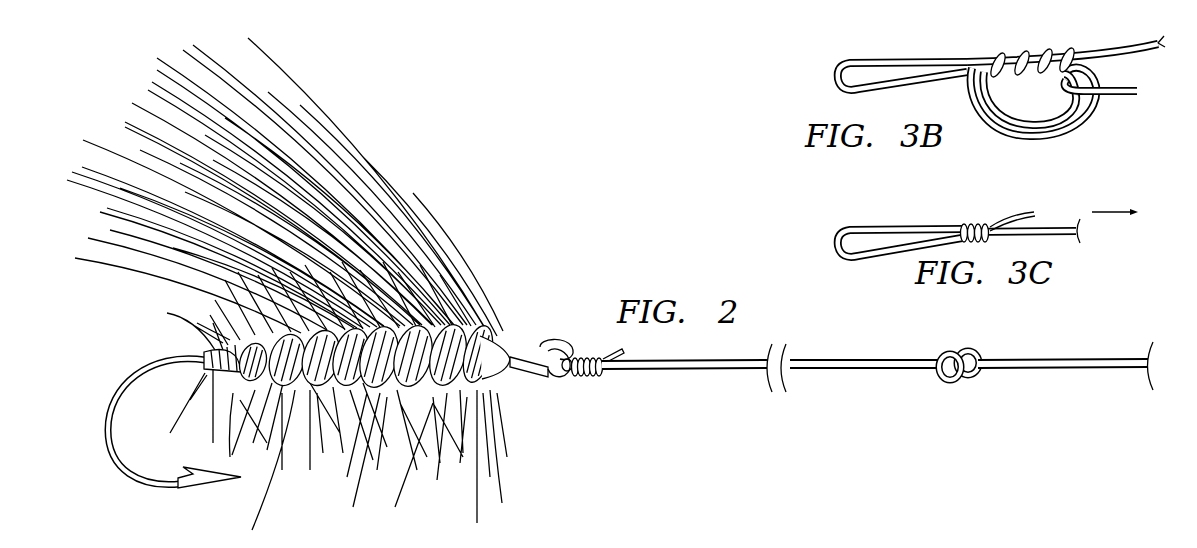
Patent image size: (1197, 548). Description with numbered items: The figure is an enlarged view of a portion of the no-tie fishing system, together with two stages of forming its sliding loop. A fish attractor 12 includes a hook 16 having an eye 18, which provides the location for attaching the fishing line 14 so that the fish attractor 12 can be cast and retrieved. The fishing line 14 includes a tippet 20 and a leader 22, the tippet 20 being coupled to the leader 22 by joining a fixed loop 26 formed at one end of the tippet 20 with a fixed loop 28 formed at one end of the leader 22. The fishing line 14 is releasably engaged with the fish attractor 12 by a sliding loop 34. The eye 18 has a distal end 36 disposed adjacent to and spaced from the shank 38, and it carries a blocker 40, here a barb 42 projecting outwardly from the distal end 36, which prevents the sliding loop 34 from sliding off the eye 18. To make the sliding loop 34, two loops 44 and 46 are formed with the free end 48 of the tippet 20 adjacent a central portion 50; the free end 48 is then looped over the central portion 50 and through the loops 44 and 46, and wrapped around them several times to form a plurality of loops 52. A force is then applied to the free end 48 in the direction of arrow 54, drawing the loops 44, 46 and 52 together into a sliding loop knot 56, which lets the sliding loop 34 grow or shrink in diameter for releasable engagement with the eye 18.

In FIG. 2, the fish attractor 12 is at (402, 150).
In FIG. 2, the fishing line 14 is at (862, 462).
In FIG. 2, the hook 16 is at (192, 352).
In FIG. 2, the eye 18 is at (556, 400).
In FIG. 2, the tippet 20 is at (692, 372).
In FIG. 2, the leader 22 is at (1103, 372).
In FIG. 2, the fixed loop 26 is at (968, 350).
In FIG. 2, the fixed loop 28 is at (945, 382).
In FIG. 2, the sliding loop 34 is at (588, 378).
In FIG. 3B, the sliding loop 34 is at (928, 43).
In FIG. 3C, the sliding loop 34 is at (930, 210).
In FIG. 2, the distal end 36 is at (553, 340).
In FIG. 2, the shank 38 is at (530, 372).
In FIG. 2, the blocker 40 is at (522, 335).
In FIG. 2, the barb 42 is at (531, 343).
In FIG. 3B, the loop 44 is at (1078, 112).
In FIG. 3B, the loop 46 is at (1103, 105).
In FIG. 3B, the free end 48 is at (1138, 90).
In FIG. 3C, the free end 48 is at (1030, 213).
In FIG. 3B, the central portion 50 is at (1040, 52).
In FIG. 3B, the plurality of loops 52 is at (1000, 50).
In FIG. 3C, the arrow 54 is at (1108, 215).
In FIG. 3C, the sliding loop knot 56 is at (975, 222).